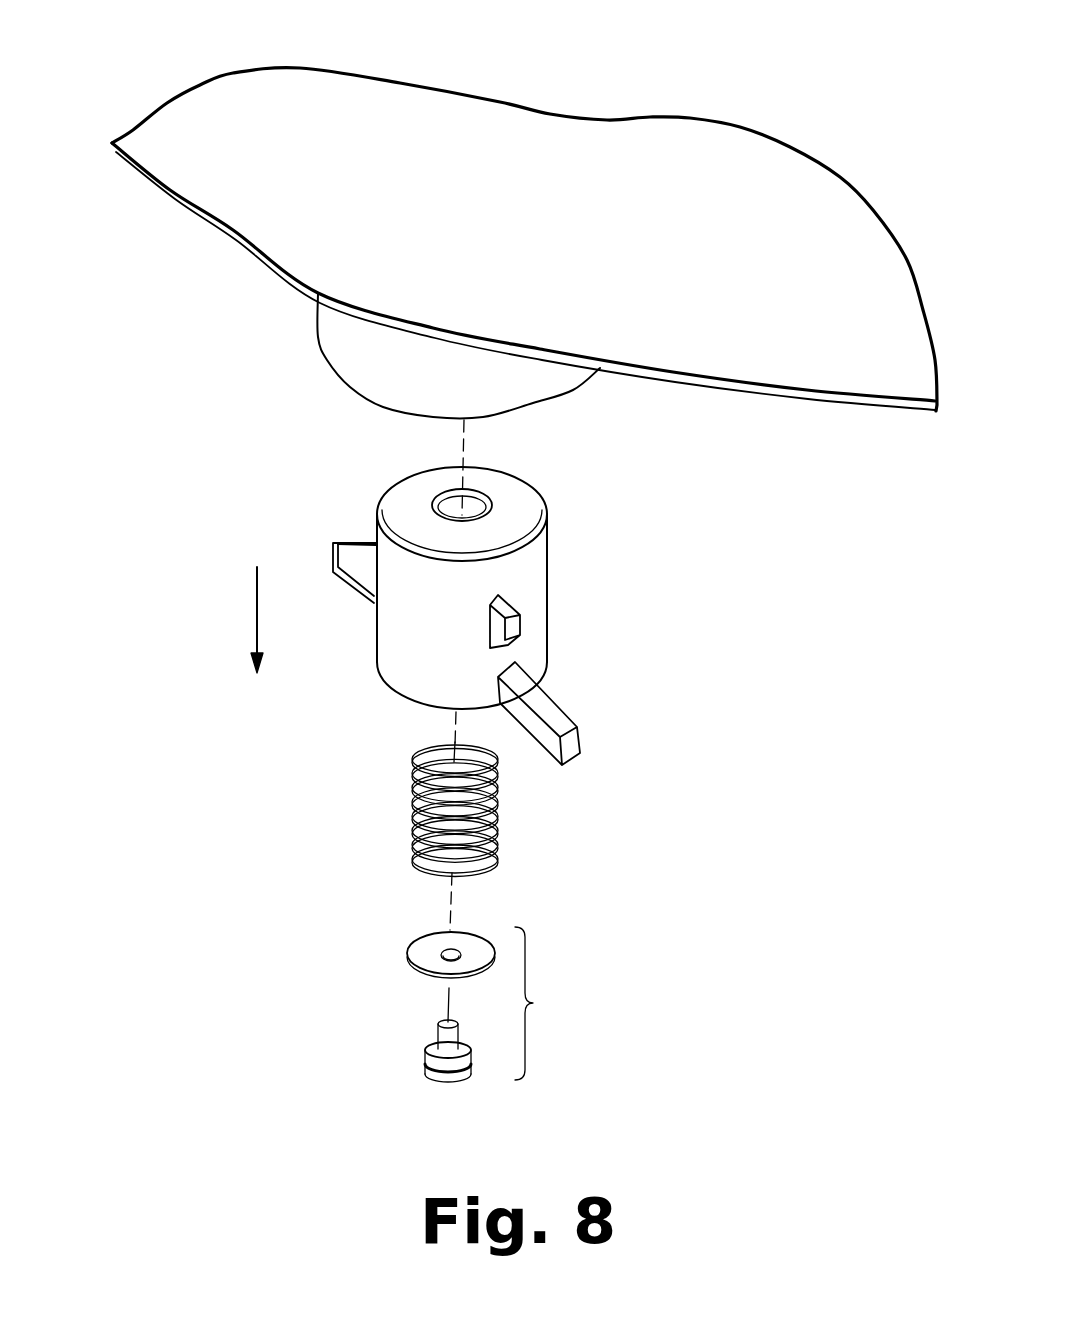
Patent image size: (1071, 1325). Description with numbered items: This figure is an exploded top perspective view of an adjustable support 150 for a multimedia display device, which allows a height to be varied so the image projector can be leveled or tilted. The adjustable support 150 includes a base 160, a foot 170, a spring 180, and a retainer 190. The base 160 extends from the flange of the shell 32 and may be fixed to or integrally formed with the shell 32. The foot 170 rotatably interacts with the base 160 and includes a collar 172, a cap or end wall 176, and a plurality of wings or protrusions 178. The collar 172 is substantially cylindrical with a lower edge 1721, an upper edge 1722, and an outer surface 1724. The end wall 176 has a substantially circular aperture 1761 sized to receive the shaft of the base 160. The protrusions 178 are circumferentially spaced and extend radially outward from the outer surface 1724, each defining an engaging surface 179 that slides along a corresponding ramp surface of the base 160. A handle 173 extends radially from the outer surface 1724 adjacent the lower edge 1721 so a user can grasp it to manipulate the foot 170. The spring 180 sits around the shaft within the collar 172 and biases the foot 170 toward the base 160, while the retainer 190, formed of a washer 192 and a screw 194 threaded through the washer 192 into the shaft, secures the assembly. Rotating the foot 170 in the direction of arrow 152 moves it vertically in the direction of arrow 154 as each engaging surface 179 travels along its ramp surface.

The shell 32 is at (315, 128).
The base 160 is at (373, 337).
The adjustable support 150 is at (173, 557).
The arrow 152 is at (407, 718).
The arrow 154 is at (253, 602).
The foot 170 is at (570, 628).
The collar 172 is at (390, 631).
The lower edge 1721 is at (537, 657).
The upper edge 1722 is at (540, 545).
The outer surface 1724 is at (380, 655).
The end wall 176 is at (515, 497).
The aperture 1761 is at (452, 495).
The protrusion 178 is at (352, 565).
The engaging surface 179 is at (368, 548).
The handle 173 is at (560, 725).
The spring 180 is at (498, 828).
The retainer 190 is at (449, 997).
The washer 192 is at (422, 957).
The screw 194 is at (425, 1050).